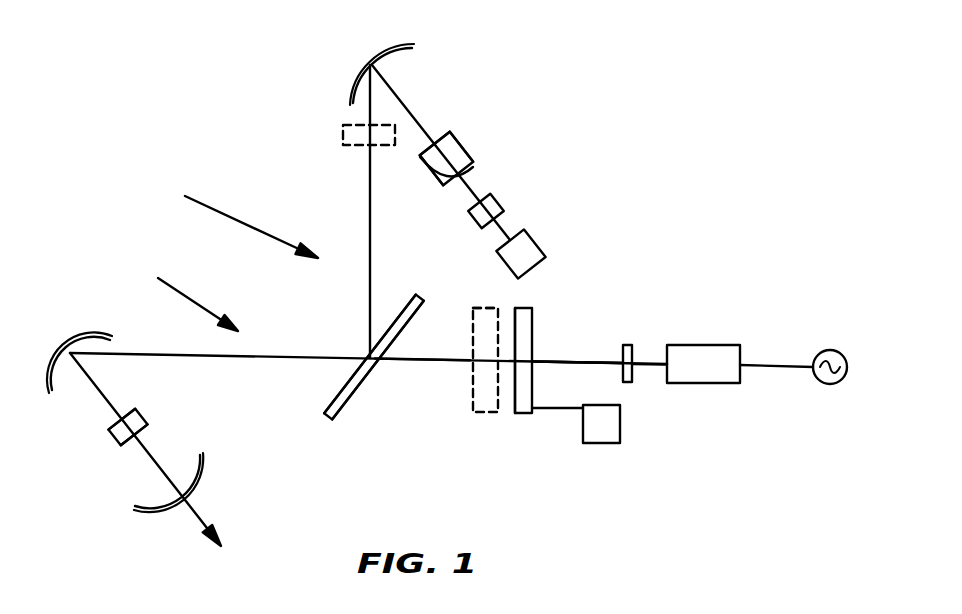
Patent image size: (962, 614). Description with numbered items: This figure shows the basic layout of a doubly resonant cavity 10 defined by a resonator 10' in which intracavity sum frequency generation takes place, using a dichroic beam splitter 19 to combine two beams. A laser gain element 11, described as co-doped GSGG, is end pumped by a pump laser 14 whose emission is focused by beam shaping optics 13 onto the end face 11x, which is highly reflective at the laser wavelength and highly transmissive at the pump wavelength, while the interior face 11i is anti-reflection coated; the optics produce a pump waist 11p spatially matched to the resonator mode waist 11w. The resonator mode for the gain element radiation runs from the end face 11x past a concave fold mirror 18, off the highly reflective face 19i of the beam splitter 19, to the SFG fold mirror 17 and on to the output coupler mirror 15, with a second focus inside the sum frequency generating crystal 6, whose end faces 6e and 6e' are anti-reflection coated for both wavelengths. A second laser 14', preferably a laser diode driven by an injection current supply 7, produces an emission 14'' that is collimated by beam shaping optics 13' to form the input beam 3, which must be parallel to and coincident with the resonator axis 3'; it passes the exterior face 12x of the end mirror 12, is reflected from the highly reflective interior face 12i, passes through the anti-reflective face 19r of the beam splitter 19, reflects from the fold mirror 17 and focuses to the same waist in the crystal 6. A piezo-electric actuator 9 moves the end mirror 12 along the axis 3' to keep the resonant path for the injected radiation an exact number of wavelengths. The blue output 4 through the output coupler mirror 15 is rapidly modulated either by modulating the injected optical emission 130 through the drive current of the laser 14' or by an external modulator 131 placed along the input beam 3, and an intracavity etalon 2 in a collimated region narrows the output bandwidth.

The intracavity etalon 2 is at (324, 134).
The input beam 3 is at (577, 379).
The resonator axis 3' is at (422, 389).
The modulated output 4 is at (151, 461).
The sum frequency generating crystal 6 is at (117, 437).
The end face of crystal 6e is at (84, 418).
The end face of crystal 6e' is at (120, 465).
The injection current supply 7 is at (837, 350).
The piezo-electric actuator 9 is at (601, 444).
The doubly resonant cavity 10 is at (234, 213).
The resonator 10' is at (183, 293).
The laser gain element 11 is at (466, 151).
The interior face of laser gain element 11i is at (441, 140).
The pump waist 11p is at (424, 160).
The resonator mode waist 11w is at (438, 184).
The end face of laser gain element 11x is at (474, 168).
The end mirror 12 is at (520, 414).
The interior face of end mirror 12i is at (513, 398).
The exterior face of end mirror 12x is at (533, 313).
The beam shaping optics 13 is at (507, 195).
The beam shaping optics 13' is at (654, 340).
The pump laser 14 is at (539, 241).
The second laser 14' is at (714, 336).
The laser emission 14'' is at (654, 395).
The output coupler mirror 15 is at (152, 511).
The SFG fold mirror 17 is at (66, 343).
The concave fold mirror 18 is at (365, 55).
The dichroic beam splitter 19 is at (327, 421).
The face of dichroic beam splitter 19i is at (340, 382).
The face of dichroic beam splitter 19r is at (348, 403).
The injected optical emission 130 is at (558, 360).
The external modulator 131 is at (497, 308).